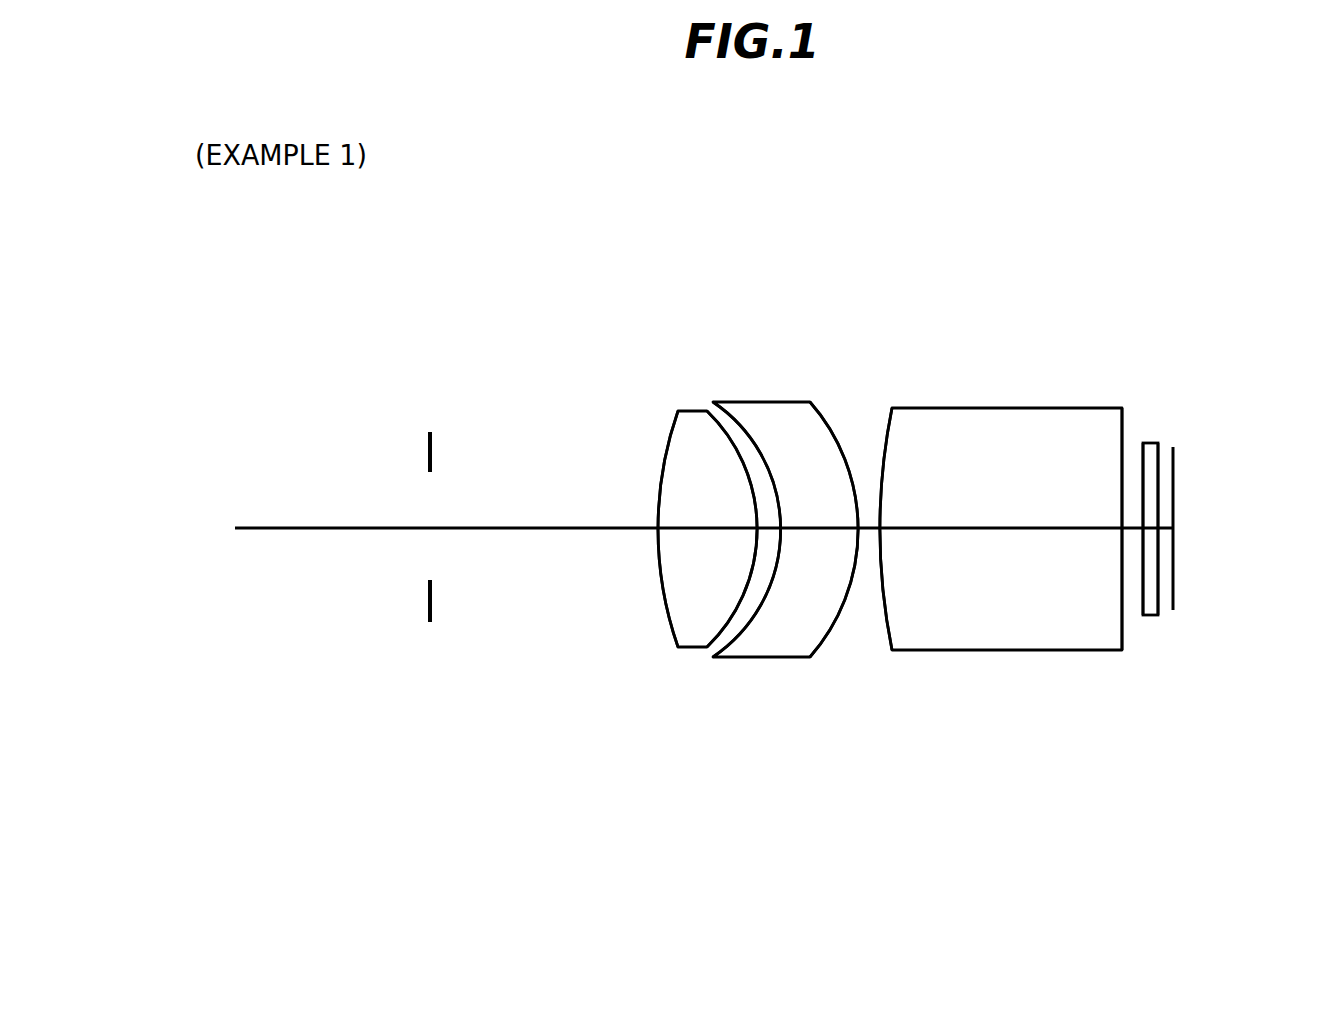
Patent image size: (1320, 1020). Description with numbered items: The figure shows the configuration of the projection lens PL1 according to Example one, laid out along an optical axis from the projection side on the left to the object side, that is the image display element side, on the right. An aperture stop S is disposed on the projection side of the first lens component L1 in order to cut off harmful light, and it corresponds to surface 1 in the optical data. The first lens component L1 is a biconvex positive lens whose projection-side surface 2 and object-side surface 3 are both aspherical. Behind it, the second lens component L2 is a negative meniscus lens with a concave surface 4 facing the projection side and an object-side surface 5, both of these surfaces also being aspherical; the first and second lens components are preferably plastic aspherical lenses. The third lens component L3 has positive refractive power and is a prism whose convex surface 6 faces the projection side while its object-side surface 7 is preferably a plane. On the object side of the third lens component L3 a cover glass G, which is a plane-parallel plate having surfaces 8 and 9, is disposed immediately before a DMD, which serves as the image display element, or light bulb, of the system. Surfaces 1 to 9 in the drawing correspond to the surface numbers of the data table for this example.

The surface number 1 is at (430, 426).
The surface number 2 is at (672, 430).
The surface number 3 is at (704, 414).
The surface number 4 is at (737, 420).
The surface number 5 is at (820, 418).
The surface number 6 is at (887, 420).
The surface number 7 is at (1121, 434).
The surface number 8 is at (1143, 460).
The surface number 9 is at (1158, 453).
The aperture stop S is at (430, 626).
The projection lens PL1 is at (748, 258).
The first lens component L1 is at (692, 649).
The second lens component L2 is at (765, 657).
The third lens component L3 is at (1010, 651).
The cover glass G is at (1145, 617).
The element DMD is at (1173, 612).